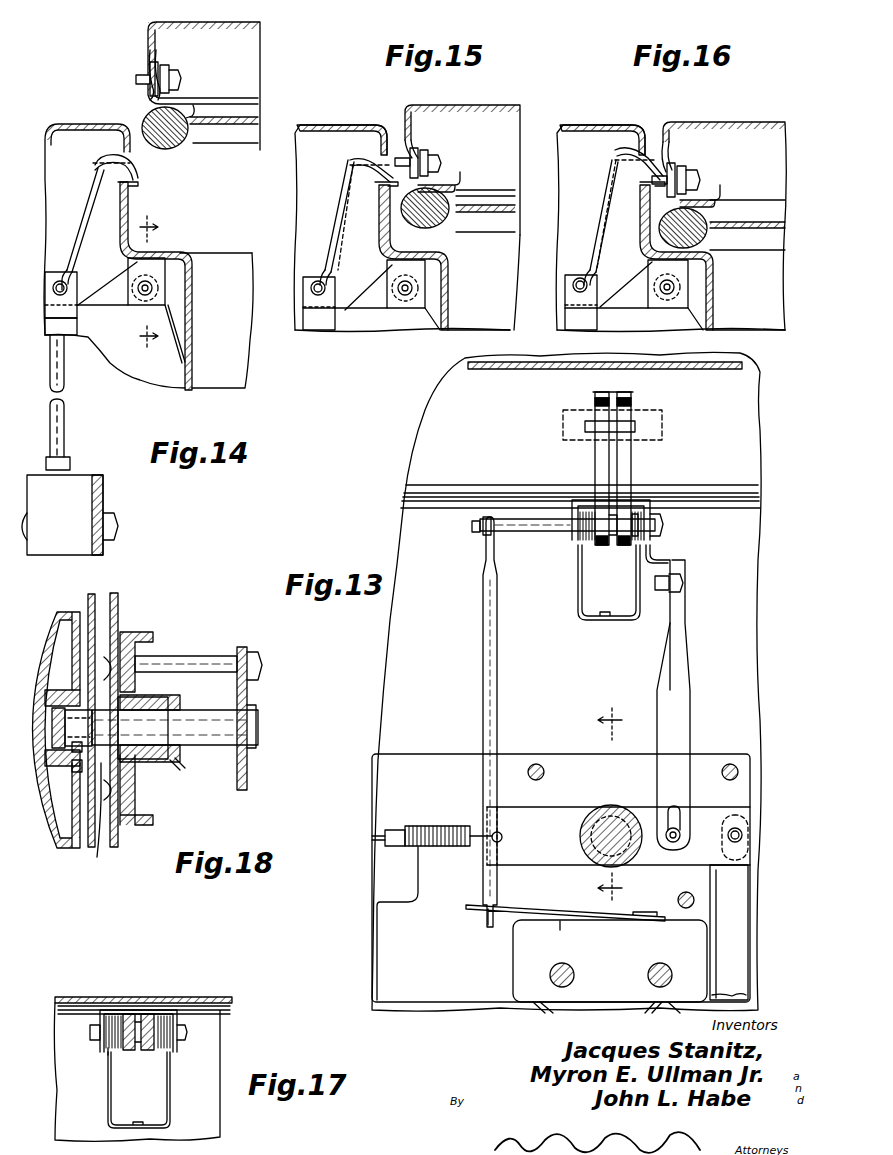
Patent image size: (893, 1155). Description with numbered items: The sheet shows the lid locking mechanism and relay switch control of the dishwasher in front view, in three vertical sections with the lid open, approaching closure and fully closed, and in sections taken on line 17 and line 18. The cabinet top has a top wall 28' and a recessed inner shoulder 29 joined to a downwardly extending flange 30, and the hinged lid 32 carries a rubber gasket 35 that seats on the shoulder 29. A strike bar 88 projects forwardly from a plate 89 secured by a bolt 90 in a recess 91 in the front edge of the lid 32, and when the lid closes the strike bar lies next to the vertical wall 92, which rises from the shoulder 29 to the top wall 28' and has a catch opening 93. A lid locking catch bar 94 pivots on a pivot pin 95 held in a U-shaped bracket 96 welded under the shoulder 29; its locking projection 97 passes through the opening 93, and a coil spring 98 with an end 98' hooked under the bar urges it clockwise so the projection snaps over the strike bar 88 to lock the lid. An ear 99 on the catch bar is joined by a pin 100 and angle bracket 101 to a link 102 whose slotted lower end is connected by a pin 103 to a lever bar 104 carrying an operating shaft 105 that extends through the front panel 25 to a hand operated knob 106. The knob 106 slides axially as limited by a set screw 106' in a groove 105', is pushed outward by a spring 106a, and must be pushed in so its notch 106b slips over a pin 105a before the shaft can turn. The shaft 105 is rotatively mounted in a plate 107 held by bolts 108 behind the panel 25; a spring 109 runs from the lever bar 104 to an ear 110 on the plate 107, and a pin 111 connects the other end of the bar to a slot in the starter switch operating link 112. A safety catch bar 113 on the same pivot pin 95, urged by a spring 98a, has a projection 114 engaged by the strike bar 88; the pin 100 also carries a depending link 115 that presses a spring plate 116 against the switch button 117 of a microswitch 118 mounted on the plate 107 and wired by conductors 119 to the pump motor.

In FIG. 14, the section line 17— 17 is at (159, 287).
In FIG. 13, the section line 18— 18 is at (602, 804).
In FIG. 18, the front panel 25 is at (118, 602).
In FIG. 14, the top wall 28' is at (114, 233).
In FIG. 15, the top wall 28' is at (402, 206).
In FIG. 16, the top wall 28' is at (670, 206).
In FIG. 13, the top wall 28' is at (629, 376).
In FIG. 14, the recessed inner shoulder 29 is at (180, 254).
In FIG. 16, the recessed inner shoulder 29 is at (713, 272).
In FIG. 17, the recessed inner shoulder 29 is at (136, 997).
In FIG. 14, the downwardly extending flange 30 is at (193, 321).
In FIG. 15, the downwardly extending flange 30 is at (450, 318).
In FIG. 16, the downwardly extending flange 30 is at (715, 315).
In FIG. 13, the downwardly extending flange 30 is at (418, 532).
In FIG. 14, the lid 32 is at (262, 44).
In FIG. 15, the lid 32 is at (498, 105).
In FIG. 16, the lid 32 is at (745, 122).
In FIG. 14, the rubber gasket 35 is at (182, 130).
In FIG. 15, the rubber gasket 35 is at (450, 216).
In FIG. 16, the rubber gasket 35 is at (708, 238).
In FIG. 14, the strike bar 88 is at (140, 76).
In FIG. 15, the strike bar 88 is at (398, 158).
In FIG. 16, the strike bar 88 is at (670, 170).
In FIG. 13, the strike bar 88 is at (640, 424).
In FIG. 14, the plate 89 is at (156, 62).
In FIG. 15, the plate 89 is at (422, 150).
In FIG. 16, the plate 89 is at (685, 166).
In FIG. 13, the plate 89 is at (662, 440).
In FIG. 14, the bolt 90 is at (182, 74).
In FIG. 15, the bolt 90 is at (443, 160).
In FIG. 16, the bolt 90 is at (702, 180).
In FIG. 14, the recess 91 is at (160, 48).
In FIG. 15, the recess 91 is at (414, 148).
In FIG. 16, the recess 91 is at (665, 138).
In FIG. 14, the vertical wall 92 is at (128, 203).
In FIG. 15, the vertical wall 92 is at (379, 235).
In FIG. 16, the vertical wall 92 is at (640, 228).
In FIG. 13, the vertical wall 92 is at (420, 448).
In FIG. 14, the catch opening 93 is at (138, 186).
In FIG. 15, the catch opening 93 is at (375, 183).
In FIG. 16, the catch opening 93 is at (640, 183).
In FIG. 13, the catch opening 93 is at (595, 398).
In FIG. 14, the lid locking catch bar 94 is at (86, 205).
In FIG. 15, the lid locking catch bar 94 is at (342, 222).
In FIG. 16, the lid locking catch bar 94 is at (606, 218).
In FIG. 13, the lid locking catch bar 94 is at (631, 462).
In FIG. 17, the lid locking catch bar 94 is at (148, 1014).
In FIG. 14, the pivot pin 95 is at (142, 292).
In FIG. 15, the pivot pin 95 is at (405, 300).
In FIG. 16, the pivot pin 95 is at (667, 296).
In FIG. 13, the pivot pin 95 is at (665, 527).
In FIG. 17, the pivot pin 95 is at (188, 1030).
In FIG. 14, the U-shaped bracket 96 is at (128, 260).
In FIG. 15, the U-shaped bracket 96 is at (387, 270).
In FIG. 16, the U-shaped bracket 96 is at (648, 266).
In FIG. 13, the U-shaped bracket 96 is at (650, 500).
In FIG. 17, the U-shaped bracket 96 is at (100, 1012).
In FIG. 14, the locking projection 97 is at (138, 168).
In FIG. 15, the locking projection 97 is at (385, 172).
In FIG. 16, the locking projection 97 is at (652, 168).
In FIG. 13, the coil spring 98 is at (669, 520).
In FIG. 17, the coil spring 98 is at (152, 1000).
In FIG. 14, the spring end 98' is at (131, 312).
In FIG. 15, the spring end 98' is at (392, 297).
In FIG. 16, the spring end 98' is at (651, 296).
In FIG. 13, the spring end 98' is at (623, 560).
In FIG. 13, the spring 98a is at (600, 545).
In FIG. 17, the spring 98a is at (110, 1052).
In FIG. 14, the ear 99 is at (64, 268).
In FIG. 15, the ear 99 is at (323, 268).
In FIG. 16, the ear 99 is at (587, 268).
In FIG. 13, the ear 99 is at (618, 520).
In FIG. 14, the pin 100 is at (50, 290).
In FIG. 15, the pin 100 is at (312, 294).
In FIG. 16, the pin 100 is at (572, 292).
In FIG. 13, the pin 100 is at (535, 531).
In FIG. 14, the angle bracket 101 is at (70, 335).
In FIG. 15, the angle bracket 101 is at (322, 330).
In FIG. 16, the angle bracket 101 is at (578, 312).
In FIG. 13, the angle bracket 101 is at (665, 560).
In FIG. 13, the link 102 is at (688, 705).
In FIG. 13, the pin 103 is at (672, 845).
In FIG. 13, the lever bar 104 is at (566, 806).
In FIG. 18, the lever bar 104 is at (180, 762).
In FIG. 13, the operating shaft 105 is at (611, 817).
In FIG. 18, the operating shaft 105 is at (175, 747).
In FIG. 18, the groove 105' is at (72, 701).
In FIG. 18, the pin 105a is at (170, 762).
In FIG. 18, the hand operated knob 106 is at (54, 720).
In FIG. 18, the set screw 106' is at (73, 772).
In FIG. 18, the spring 106a is at (113, 817).
In FIG. 18, the notch 106b is at (138, 700).
In FIG. 14, the plate 107 is at (104, 551).
In FIG. 13, the plate 107 is at (433, 754).
In FIG. 18, the plate 107 is at (242, 790).
In FIG. 13, the bolts 108 is at (538, 764).
In FIG. 18, the bolts 108 is at (193, 656).
In FIG. 13, the spring 109 is at (437, 826).
In FIG. 13, the ear 110 is at (386, 830).
In FIG. 13, the pin 111 is at (742, 826).
In FIG. 13, the starter switch operating link 112 is at (740, 901).
In FIG. 15, the safety catch bar 113 is at (350, 172).
In FIG. 16, the safety catch bar 113 is at (610, 176).
In FIG. 13, the safety catch bar 113 is at (595, 463).
In FIG. 17, the safety catch bar 113 is at (128, 1014).
In FIG. 14, the projection 114 is at (93, 164).
In FIG. 15, the projection 114 is at (350, 160).
In FIG. 16, the projection 114 is at (615, 158).
In FIG. 14, the depending link 115 is at (64, 412).
In FIG. 13, the depending link 115 is at (483, 632).
In FIG. 13, the spring plate 116 is at (527, 908).
In FIG. 13, the switch button 117 is at (561, 925).
In FIG. 14, the microswitch 118 is at (85, 491).
In FIG. 13, the microswitch 118 is at (513, 963).
In FIG. 13, the conductors 119 is at (545, 1000).